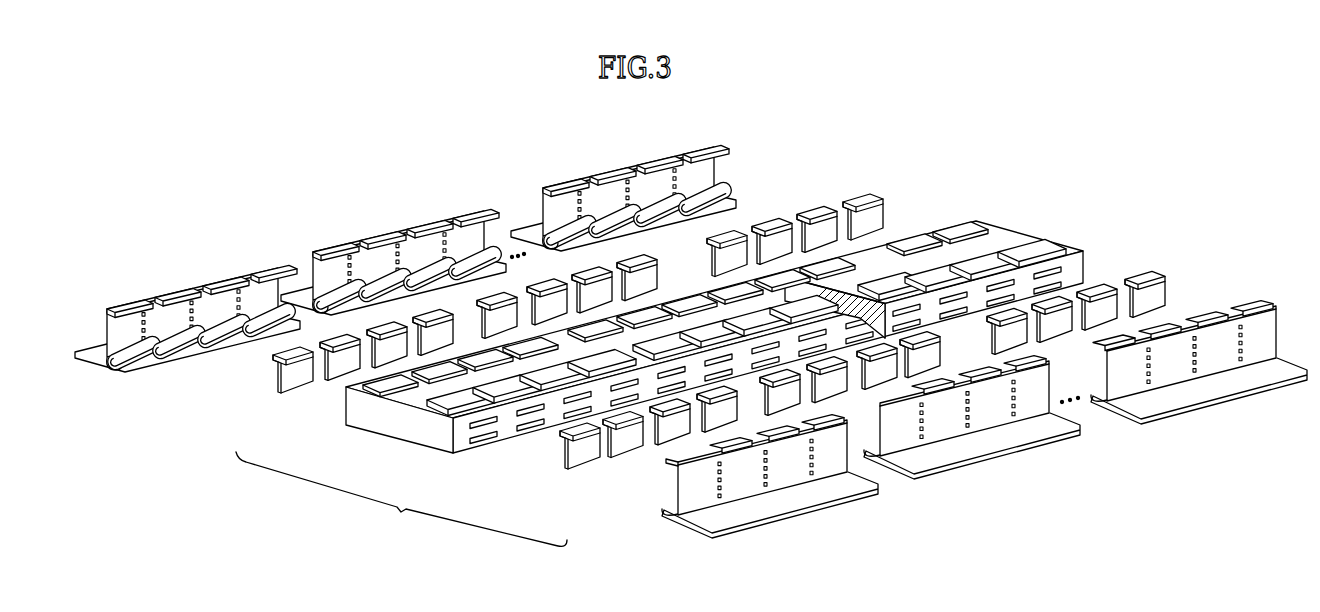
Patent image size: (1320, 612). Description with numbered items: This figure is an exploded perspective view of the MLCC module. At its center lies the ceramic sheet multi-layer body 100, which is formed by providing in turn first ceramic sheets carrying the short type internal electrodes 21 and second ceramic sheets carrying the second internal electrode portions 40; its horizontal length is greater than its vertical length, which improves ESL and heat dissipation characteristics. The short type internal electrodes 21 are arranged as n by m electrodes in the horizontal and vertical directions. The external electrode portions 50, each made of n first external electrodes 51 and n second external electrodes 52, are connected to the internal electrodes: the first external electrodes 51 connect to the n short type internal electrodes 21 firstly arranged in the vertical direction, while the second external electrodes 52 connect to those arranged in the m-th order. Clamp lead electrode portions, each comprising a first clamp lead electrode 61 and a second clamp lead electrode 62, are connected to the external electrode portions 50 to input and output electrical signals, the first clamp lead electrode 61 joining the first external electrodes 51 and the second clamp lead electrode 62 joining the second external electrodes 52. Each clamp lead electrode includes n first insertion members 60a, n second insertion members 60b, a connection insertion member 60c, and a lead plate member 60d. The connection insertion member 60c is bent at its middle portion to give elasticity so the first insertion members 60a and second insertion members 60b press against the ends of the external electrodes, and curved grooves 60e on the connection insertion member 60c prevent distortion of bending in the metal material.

The ceramic sheet multi-layer body 100 is at (1021, 227).
The short type internal electrodes 21 is at (953, 224).
The second internal electrode portions 40 is at (852, 283).
The external electrode portions 50 is at (806, 167).
The first external electrodes 51 is at (293, 380).
The second external electrodes 52 is at (572, 452).
The first clamp lead electrode 61 is at (606, 166).
The second clamp lead electrode 62 is at (791, 522).
The first insertion members 60a is at (137, 307).
The second insertion members 60b is at (122, 368).
The connection insertion member 60c is at (207, 300).
The lead plate member 60d is at (93, 352).
The curved grooves 60e is at (192, 337).